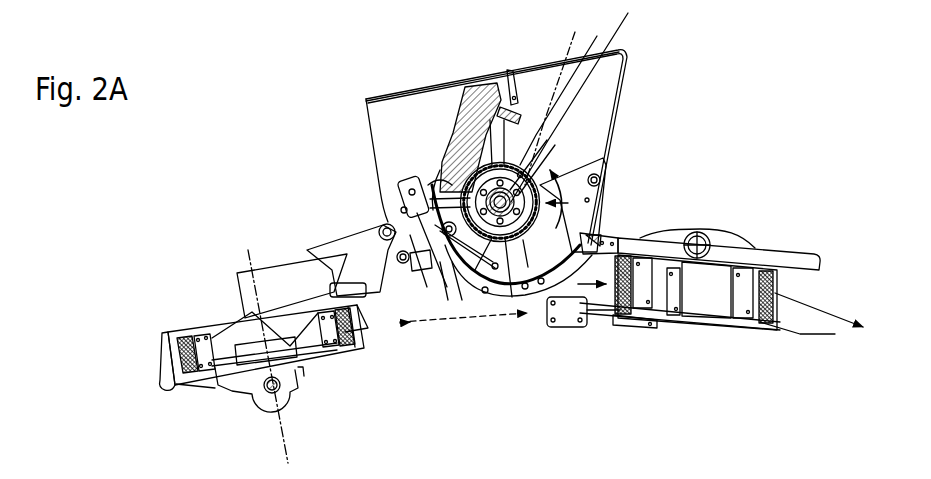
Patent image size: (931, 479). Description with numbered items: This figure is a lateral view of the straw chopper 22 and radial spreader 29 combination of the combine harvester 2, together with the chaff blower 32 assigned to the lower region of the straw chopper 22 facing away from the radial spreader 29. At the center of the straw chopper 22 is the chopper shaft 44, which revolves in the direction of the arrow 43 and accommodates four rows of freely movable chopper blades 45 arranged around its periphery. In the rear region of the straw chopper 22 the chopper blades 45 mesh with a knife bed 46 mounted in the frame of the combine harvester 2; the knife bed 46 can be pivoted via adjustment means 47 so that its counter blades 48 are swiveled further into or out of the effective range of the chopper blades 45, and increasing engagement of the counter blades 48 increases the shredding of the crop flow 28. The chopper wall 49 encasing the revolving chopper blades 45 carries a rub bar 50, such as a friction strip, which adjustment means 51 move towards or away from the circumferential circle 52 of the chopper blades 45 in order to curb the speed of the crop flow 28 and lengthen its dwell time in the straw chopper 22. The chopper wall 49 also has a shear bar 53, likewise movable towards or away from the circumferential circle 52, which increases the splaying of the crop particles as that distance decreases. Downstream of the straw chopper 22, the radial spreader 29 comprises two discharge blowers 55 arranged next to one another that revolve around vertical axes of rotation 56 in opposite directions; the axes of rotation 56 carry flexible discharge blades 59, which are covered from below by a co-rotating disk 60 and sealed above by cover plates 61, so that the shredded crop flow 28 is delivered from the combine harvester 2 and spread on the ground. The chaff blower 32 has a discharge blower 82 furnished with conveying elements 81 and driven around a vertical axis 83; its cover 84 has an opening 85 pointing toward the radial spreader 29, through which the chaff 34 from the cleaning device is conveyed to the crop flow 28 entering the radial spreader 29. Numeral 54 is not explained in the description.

The combine harvester 2 is at (282, 172).
The straw chopper 22 is at (645, 108).
The crop flow 28 is at (455, 110).
The radial spreader 29 is at (748, 215).
The chaff blower 32 is at (228, 410).
The chaff 34 is at (200, 299).
The arrow 43 is at (597, 182).
The chopper shaft 44 is at (583, 101).
The chopper blades 45 is at (437, 190).
The knife bed 46 is at (400, 210).
The adjustment means 47 is at (392, 183).
The counter blades 48 is at (404, 212).
The chopper wall 49 is at (464, 300).
The rub bar 50 is at (441, 300).
The adjustment means 51 is at (432, 265).
The circumferential circle 52 is at (542, 93).
The shear bar 53 is at (430, 172).
The stop 54 is at (420, 162).
The discharge blowers 55 is at (718, 312).
The vertical axes of rotation 56 is at (690, 345).
The flexible discharge blades 59 is at (622, 305).
The co-rotating disk 60 is at (800, 330).
The cover plates 61 is at (826, 250).
The conveying elements 81 is at (228, 378).
The discharge blower 82 is at (313, 378).
The vertical axis 83 is at (245, 250).
The cover 84 is at (166, 346).
The opening 85 is at (372, 338).